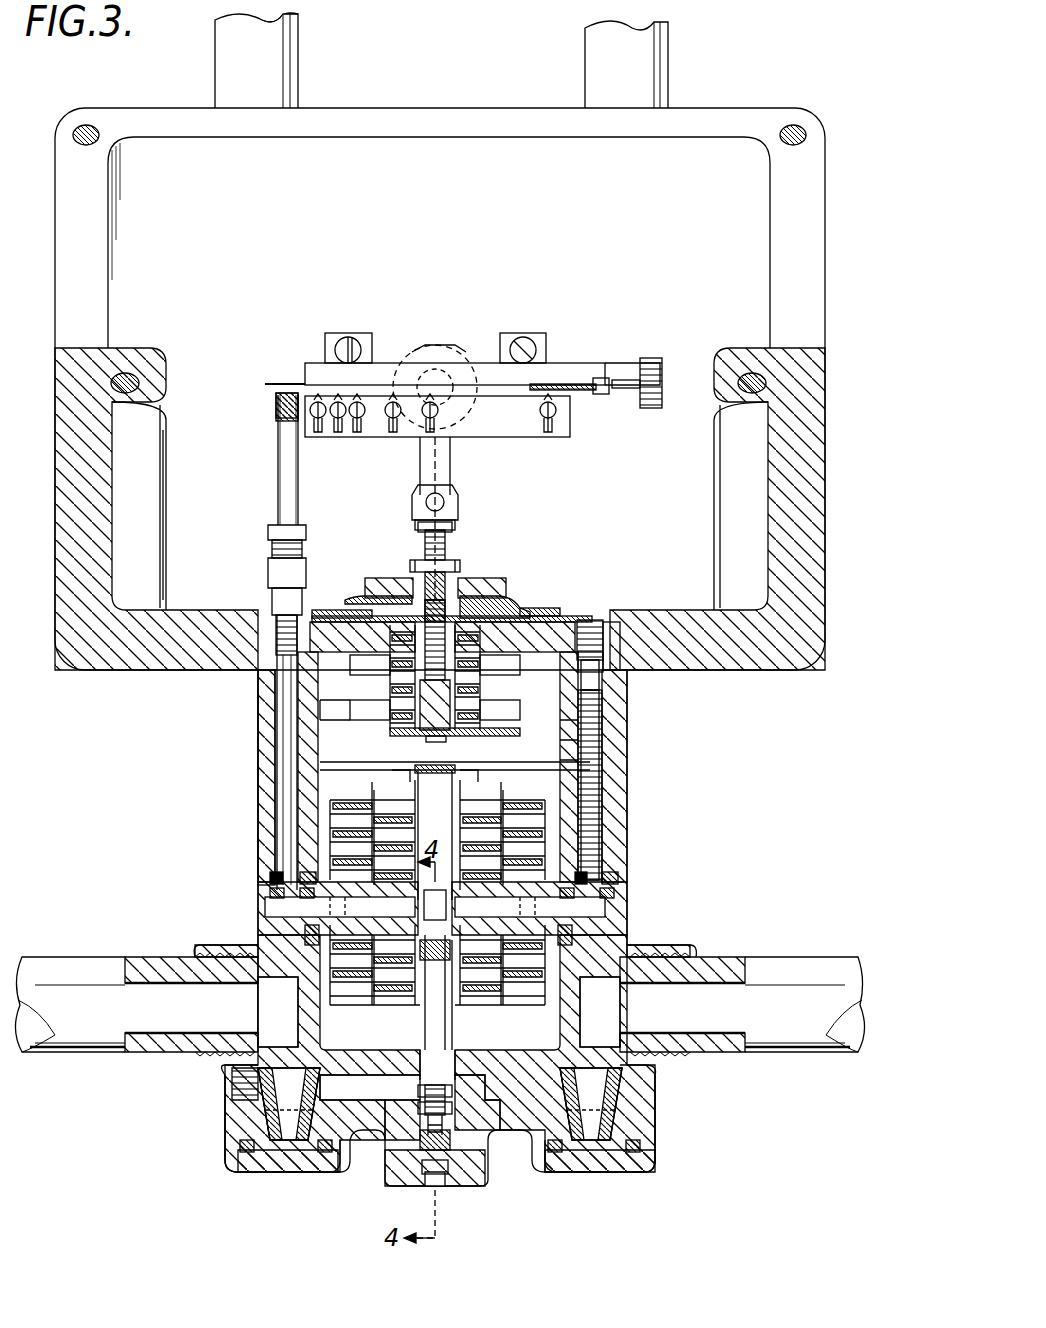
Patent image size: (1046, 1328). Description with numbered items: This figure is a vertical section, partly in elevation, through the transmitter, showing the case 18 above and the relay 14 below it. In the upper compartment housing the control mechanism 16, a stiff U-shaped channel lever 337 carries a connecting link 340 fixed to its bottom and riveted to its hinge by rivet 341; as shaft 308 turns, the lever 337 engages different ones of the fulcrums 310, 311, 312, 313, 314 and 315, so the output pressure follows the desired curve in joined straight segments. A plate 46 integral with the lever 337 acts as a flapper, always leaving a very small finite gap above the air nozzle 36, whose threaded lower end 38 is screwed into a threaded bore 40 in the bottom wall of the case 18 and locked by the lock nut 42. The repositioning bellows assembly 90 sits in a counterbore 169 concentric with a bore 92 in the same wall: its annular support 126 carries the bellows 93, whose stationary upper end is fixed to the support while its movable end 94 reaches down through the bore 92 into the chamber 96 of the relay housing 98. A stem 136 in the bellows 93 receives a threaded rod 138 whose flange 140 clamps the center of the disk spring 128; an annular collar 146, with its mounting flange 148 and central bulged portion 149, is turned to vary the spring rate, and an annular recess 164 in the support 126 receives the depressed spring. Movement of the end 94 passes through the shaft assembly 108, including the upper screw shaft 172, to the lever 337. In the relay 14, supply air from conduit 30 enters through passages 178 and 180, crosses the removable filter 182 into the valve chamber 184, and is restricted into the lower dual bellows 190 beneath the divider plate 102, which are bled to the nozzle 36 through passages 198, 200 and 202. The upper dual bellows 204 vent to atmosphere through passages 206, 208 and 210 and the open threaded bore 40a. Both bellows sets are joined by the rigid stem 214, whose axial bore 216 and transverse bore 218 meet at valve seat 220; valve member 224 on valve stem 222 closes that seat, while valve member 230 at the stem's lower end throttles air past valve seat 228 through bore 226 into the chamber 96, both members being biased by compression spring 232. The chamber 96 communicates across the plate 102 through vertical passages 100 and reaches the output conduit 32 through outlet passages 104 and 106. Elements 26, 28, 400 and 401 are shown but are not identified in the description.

The relay 14 is at (636, 727).
The control mechanism 16 is at (540, 249).
The case 18 is at (826, 238).
The conduit 26 is at (299, 60).
The conduit 28 is at (670, 76).
The conduit 30 is at (72, 1046).
The output conduit 32 is at (800, 966).
The air nozzle 36 is at (278, 492).
The lower end of nozzle 38 is at (280, 690).
The threaded bore 40 is at (278, 655).
The threaded bore 40a is at (596, 640).
The lock nut 42 is at (270, 580).
The plate 46 is at (285, 392).
The repositioning bellows assembly 90 is at (350, 598).
The bore 92 is at (500, 690).
The bellows 93 is at (389, 710).
The movable end 94 is at (405, 736).
The chamber 96 is at (600, 748).
The relay housing 98 is at (610, 750).
The vertical passages 100 is at (615, 915).
The divider plate 102 is at (268, 878).
The outlet passage 104 is at (548, 1150).
The outlet passage 106 is at (597, 1012).
The shaft assembly 108 is at (468, 512).
The annular support 126 is at (520, 640).
The disk spring 128 is at (512, 618).
The stem 136 is at (436, 737).
The threaded rod 138 is at (440, 606).
The flange 140 is at (378, 606).
The annular collar 146 is at (500, 602).
The mounting flange 148 is at (585, 620).
The central bulged portion 149 is at (525, 612).
The annular recess 164 is at (605, 665).
The counterbore 169 is at (318, 608).
The upper screw shaft 172 is at (425, 540).
The passage 178 is at (275, 1004).
The passage 180 is at (252, 1160).
The removable filter 182 is at (260, 1095).
The chamber 184 is at (330, 1150).
The lower dual bellows 190 is at (500, 1004).
The passage 198 is at (378, 1005).
The passage 200 is at (280, 910).
The passage 202 is at (275, 755).
The upper dual bellows 204 is at (372, 800).
The passage 206 is at (490, 886).
The passage 208 is at (600, 878).
The passage 210 is at (600, 790).
The rigid stem 214 is at (432, 770).
The axial bore 216 is at (492, 1000).
The transverse bore 218 is at (436, 935).
The valve seat 220 is at (430, 1000).
The valve stem 222 is at (512, 1110).
The valve member 224 is at (330, 1090).
The bore 226 is at (425, 1150).
The valve seat 228 is at (420, 1125).
The valve member 230 is at (448, 1140).
The compression spring 232 is at (438, 1186).
The shaft 308 is at (452, 352).
The fulcrum 310 is at (318, 433).
The fulcrum 311 is at (338, 433).
The fulcrum 312 is at (357, 433).
The fulcrum 313 is at (393, 433).
The fulcrum 314 is at (432, 432).
The fulcrum 315 is at (548, 433).
The lever 337 is at (303, 368).
The connecting link 340 is at (575, 382).
The rivet 341 is at (596, 378).
The nut 400 is at (410, 565).
The stem 401 is at (447, 580).